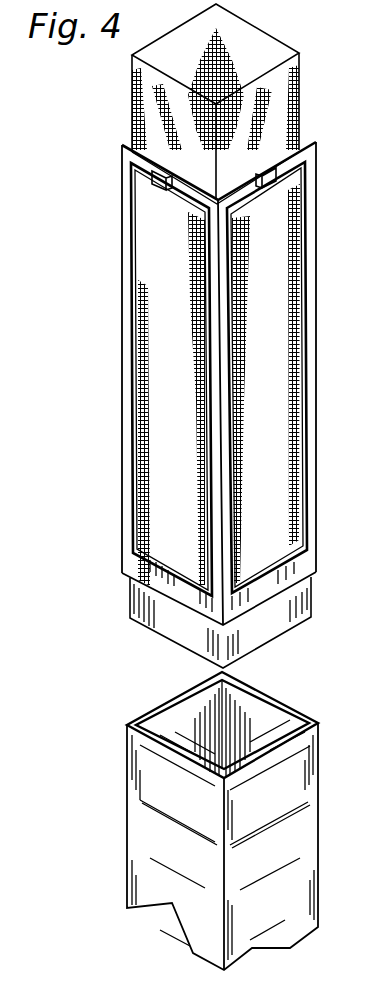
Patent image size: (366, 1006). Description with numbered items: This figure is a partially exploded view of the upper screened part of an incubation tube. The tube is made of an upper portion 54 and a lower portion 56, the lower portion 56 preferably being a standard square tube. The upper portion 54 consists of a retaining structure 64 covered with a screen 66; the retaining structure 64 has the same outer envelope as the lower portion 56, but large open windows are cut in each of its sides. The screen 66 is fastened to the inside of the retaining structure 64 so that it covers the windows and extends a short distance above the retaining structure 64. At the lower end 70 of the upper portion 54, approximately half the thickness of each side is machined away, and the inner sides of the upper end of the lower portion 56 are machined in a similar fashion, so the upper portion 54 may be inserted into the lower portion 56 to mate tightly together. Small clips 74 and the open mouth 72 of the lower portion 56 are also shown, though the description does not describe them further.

The upper portion 54 is at (98, 148).
The lower portion 56 is at (312, 843).
The retaining structure 64 is at (318, 137).
The screen 66 is at (300, 72).
The lower end 70 is at (144, 624).
The base opening 72 is at (153, 712).
The retaining clip 74 is at (162, 178).